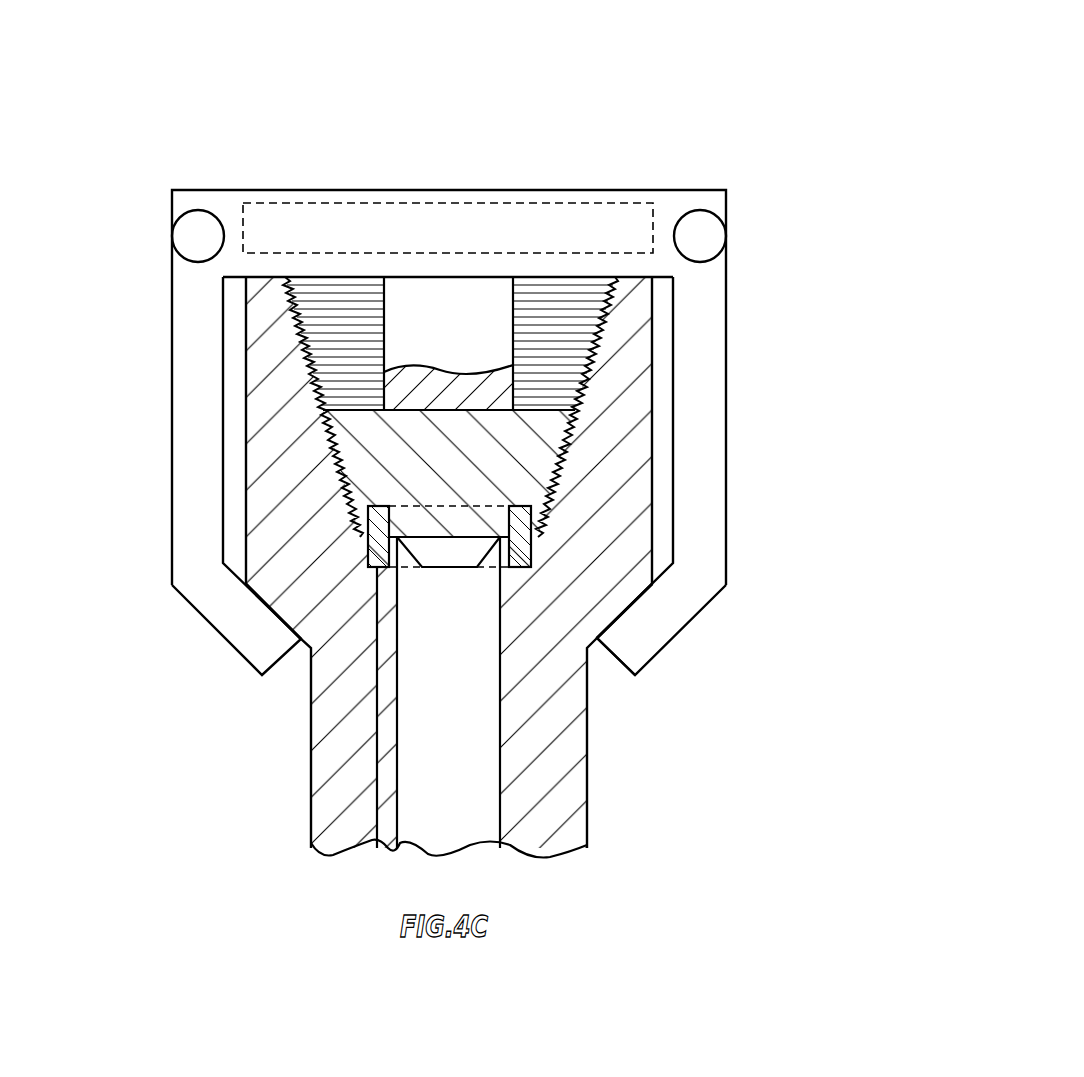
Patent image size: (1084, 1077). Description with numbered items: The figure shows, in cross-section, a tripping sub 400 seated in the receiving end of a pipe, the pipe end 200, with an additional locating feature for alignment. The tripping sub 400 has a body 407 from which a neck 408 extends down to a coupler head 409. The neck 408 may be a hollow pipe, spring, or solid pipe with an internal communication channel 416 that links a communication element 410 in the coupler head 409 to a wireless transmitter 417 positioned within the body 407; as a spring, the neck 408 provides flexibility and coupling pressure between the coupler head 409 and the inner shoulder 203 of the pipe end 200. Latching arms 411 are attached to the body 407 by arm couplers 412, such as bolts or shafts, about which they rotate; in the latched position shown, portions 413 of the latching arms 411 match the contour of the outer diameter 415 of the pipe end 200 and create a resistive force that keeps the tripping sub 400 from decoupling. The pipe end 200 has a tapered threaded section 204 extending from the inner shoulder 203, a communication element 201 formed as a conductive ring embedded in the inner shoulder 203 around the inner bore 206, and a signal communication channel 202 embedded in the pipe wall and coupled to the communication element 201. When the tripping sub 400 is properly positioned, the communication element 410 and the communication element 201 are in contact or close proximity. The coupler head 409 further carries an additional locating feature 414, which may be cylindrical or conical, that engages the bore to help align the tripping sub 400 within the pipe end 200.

The tripping sub 400 is at (688, 102).
The body 407 is at (205, 190).
The wireless transmitter 417 is at (316, 203).
The arm couplers 412 is at (188, 236).
The threaded section 204 is at (290, 340).
The internal communication channel 416 is at (392, 455).
The neck 408 is at (518, 343).
The latching arms 411 is at (705, 372).
The pipe end 200 is at (625, 410).
The coupler head 409 is at (545, 463).
The communication element 410 is at (368, 513).
The communication element 201 is at (368, 550).
The inner shoulder 203 is at (538, 537).
The additional locating feature 414 is at (412, 560).
The portions 413 is at (660, 626).
The outer diameter 415 is at (590, 648).
The signal communication channel 202 is at (378, 763).
The inner bore 206 is at (492, 767).